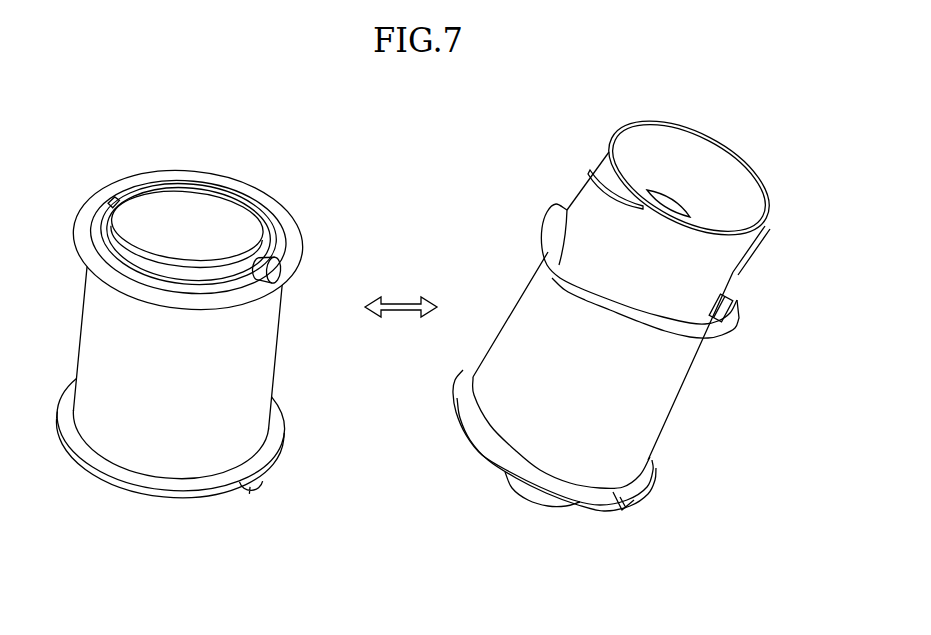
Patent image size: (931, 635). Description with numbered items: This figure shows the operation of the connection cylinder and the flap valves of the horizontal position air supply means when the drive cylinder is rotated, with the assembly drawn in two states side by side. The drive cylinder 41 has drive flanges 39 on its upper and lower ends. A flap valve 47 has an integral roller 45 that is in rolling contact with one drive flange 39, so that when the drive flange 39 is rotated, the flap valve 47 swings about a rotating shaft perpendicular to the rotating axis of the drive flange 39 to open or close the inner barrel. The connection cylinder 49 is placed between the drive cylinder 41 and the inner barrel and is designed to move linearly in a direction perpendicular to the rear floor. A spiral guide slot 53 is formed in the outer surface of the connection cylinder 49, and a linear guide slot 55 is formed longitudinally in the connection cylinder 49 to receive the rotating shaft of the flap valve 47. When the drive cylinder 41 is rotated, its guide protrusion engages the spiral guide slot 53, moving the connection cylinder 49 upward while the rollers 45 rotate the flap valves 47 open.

The drive flange 39 is at (273, 213).
The drive cylinder 41 is at (108, 432).
The roller 45 is at (288, 268).
The flap valve 47 is at (193, 203).
The connection cylinder 49 is at (102, 203).
The spiral guide slot 53 is at (590, 173).
The linear guide slot 55 is at (776, 233).